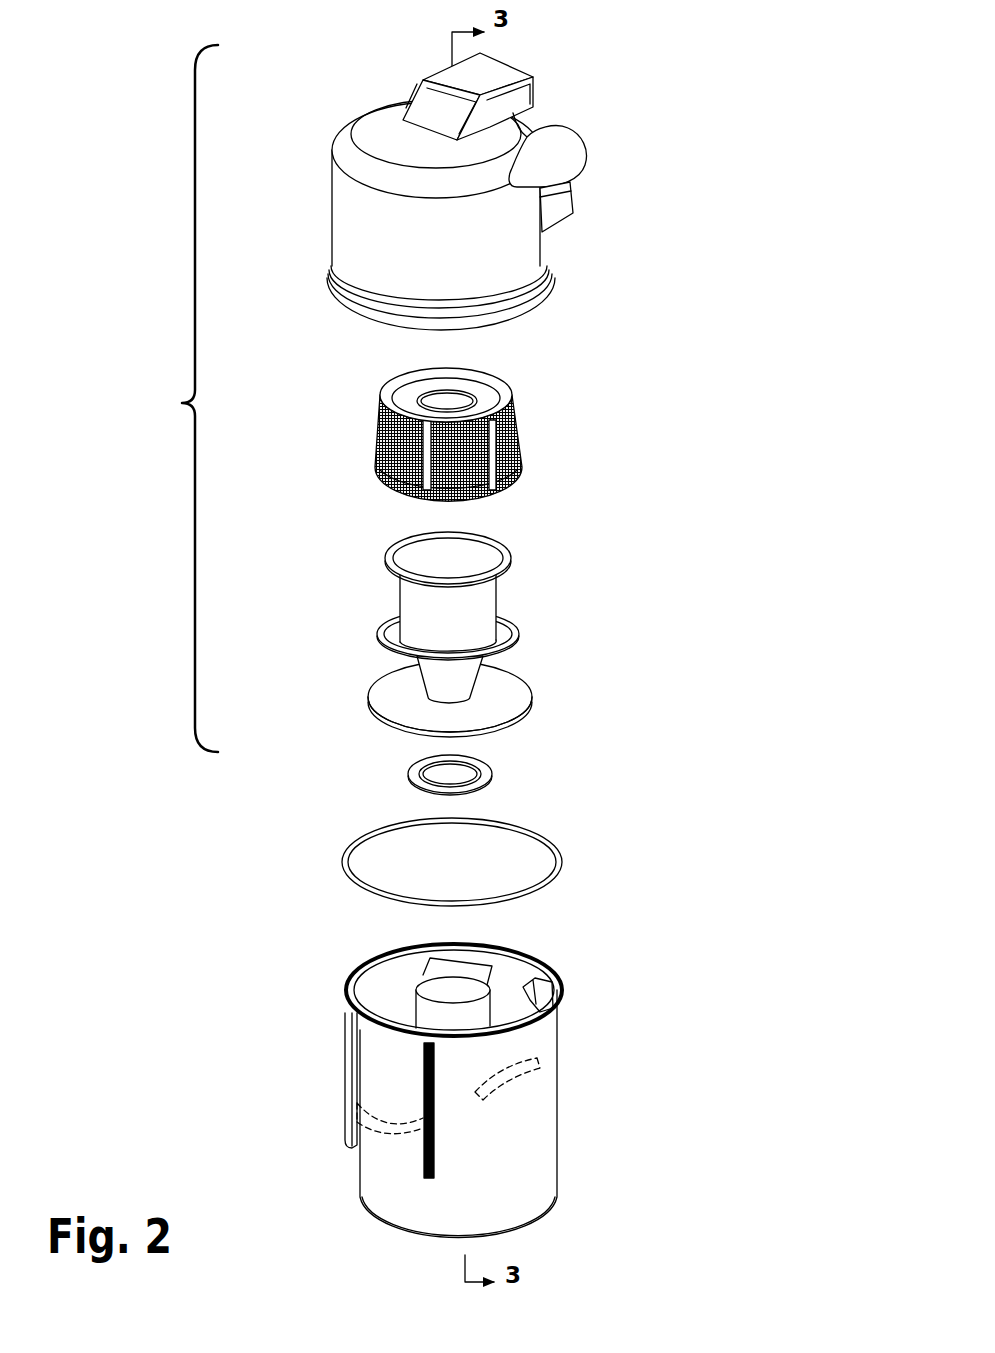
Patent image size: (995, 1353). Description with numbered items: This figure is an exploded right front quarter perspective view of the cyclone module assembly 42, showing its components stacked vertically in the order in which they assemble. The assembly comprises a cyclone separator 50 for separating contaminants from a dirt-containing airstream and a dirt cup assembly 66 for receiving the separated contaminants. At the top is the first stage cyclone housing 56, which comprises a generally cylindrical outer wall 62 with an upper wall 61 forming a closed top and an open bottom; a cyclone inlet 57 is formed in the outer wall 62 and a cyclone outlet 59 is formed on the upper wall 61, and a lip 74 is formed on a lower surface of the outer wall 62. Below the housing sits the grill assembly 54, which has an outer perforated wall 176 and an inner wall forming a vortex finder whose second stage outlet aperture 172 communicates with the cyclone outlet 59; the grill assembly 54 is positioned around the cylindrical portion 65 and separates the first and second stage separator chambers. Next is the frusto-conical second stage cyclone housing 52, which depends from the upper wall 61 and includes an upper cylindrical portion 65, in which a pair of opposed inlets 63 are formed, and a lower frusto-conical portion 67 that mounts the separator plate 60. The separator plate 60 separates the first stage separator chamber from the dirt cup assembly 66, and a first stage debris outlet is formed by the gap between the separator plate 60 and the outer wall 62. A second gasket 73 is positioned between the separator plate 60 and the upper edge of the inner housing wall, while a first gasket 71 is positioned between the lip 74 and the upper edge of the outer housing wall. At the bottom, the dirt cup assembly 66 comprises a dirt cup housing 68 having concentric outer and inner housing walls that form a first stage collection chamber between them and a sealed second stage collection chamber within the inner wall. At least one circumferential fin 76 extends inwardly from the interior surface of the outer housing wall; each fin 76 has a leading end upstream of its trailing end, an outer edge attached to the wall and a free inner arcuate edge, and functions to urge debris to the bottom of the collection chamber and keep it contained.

The cyclone module assembly 42 is at (706, 75).
The cyclone separator 50 is at (182, 398).
The second stage cyclone housing 52 is at (464, 601).
The grill assembly 54 is at (451, 422).
The first stage cyclone housing 56 is at (452, 188).
The cyclone inlet 57 is at (573, 155).
The cyclone outlet 59 is at (508, 72).
The separator plate 60 is at (388, 702).
The upper wall 61 is at (377, 133).
The outer wall 62 is at (497, 269).
The inlets 63 is at (503, 610).
The cylindrical portion 65 is at (410, 603).
The dirt cup assembly 66 is at (461, 1083).
The frusto-conical portion 67 is at (465, 673).
The dirt cup housing 68 is at (378, 1168).
The first gasket 71 is at (547, 840).
The second gasket 73 is at (494, 775).
The lip 74 is at (357, 303).
The circumferential fin 76 is at (443, 963).
The second stage outlet aperture 172 is at (435, 400).
The outer perforated wall 176 is at (380, 450).